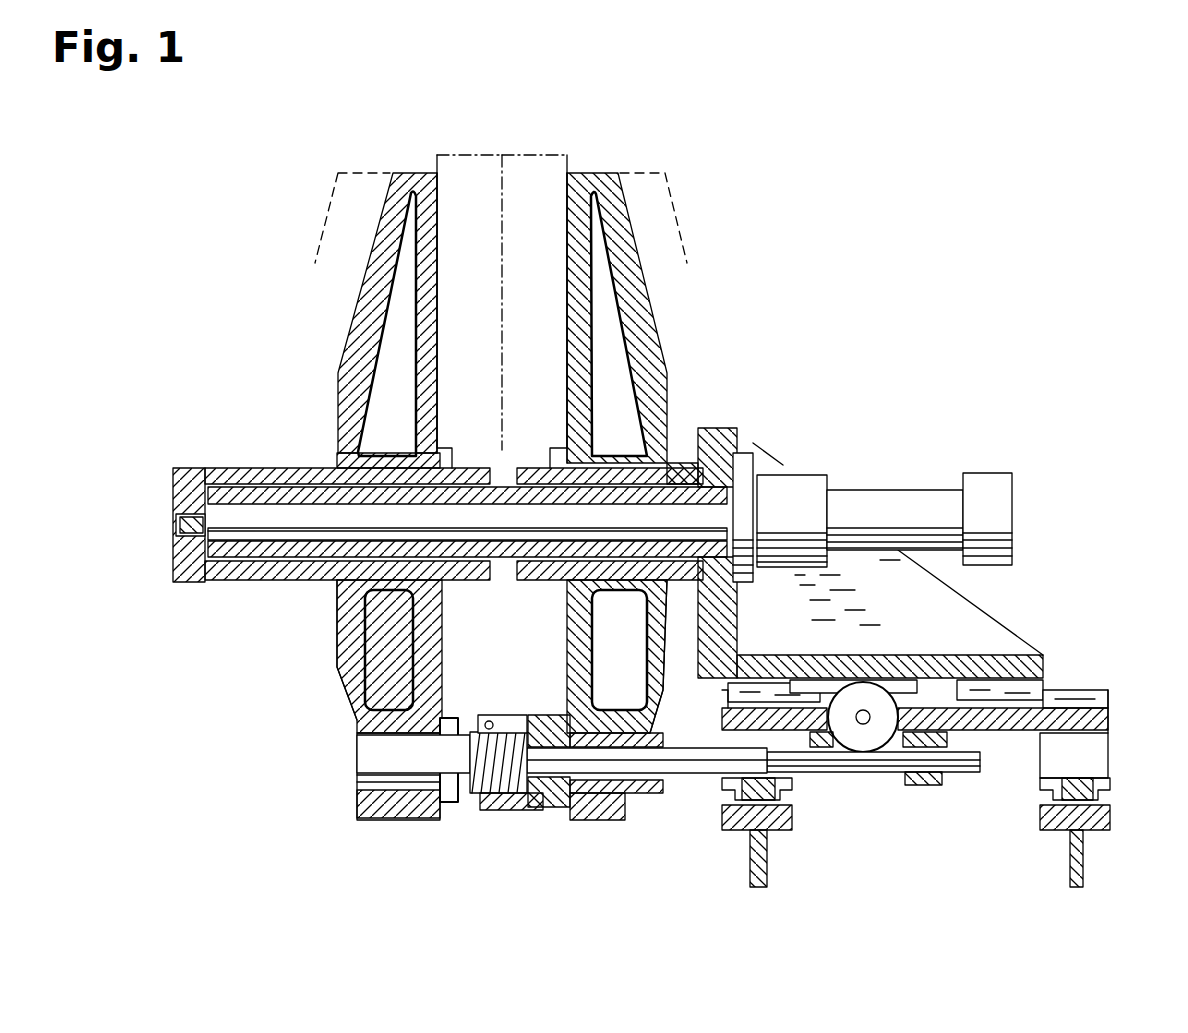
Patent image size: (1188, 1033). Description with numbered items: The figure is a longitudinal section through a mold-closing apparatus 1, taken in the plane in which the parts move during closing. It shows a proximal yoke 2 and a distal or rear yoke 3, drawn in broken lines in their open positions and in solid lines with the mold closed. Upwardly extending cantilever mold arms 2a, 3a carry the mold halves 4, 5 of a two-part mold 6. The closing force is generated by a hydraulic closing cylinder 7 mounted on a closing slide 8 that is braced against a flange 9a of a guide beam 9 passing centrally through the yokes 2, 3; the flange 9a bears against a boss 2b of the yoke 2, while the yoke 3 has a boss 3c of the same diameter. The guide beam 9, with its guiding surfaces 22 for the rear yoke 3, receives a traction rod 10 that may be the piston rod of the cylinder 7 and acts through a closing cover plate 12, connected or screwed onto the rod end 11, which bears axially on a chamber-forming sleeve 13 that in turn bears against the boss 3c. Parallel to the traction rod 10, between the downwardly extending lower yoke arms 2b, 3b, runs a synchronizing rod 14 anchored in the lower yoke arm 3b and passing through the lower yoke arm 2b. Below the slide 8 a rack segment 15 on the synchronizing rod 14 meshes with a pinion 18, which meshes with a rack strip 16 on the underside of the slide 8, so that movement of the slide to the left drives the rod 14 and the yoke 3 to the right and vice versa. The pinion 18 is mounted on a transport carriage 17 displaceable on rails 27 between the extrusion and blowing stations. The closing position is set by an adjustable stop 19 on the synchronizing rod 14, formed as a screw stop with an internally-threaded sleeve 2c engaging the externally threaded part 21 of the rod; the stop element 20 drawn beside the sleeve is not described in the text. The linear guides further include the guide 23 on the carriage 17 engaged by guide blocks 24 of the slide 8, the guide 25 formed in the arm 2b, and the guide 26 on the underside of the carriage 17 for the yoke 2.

The closing apparatus 1 is at (702, 98).
The proximal yoke 2 is at (678, 222).
The cantilever mold arm 2a is at (567, 247).
The lower yoke arm 2b is at (567, 645).
The internally-threaded sleeve 2c is at (660, 613).
The distal yoke 3 is at (327, 220).
The cantilever mold arm 3a is at (438, 347).
The lower yoke arm 3b is at (443, 643).
The boss 3c is at (332, 592).
The mold half 4 is at (545, 170).
The mold half 5 is at (466, 176).
The two-part mold 6 is at (510, 143).
The hydraulic closing cylinder 7 is at (880, 505).
The closing slide 8 is at (718, 428).
The guide beam 9 is at (289, 490).
The flange 9a is at (683, 463).
The traction rod 10 is at (313, 530).
The rod end 11 is at (175, 524).
The closing cover plate 12 is at (187, 493).
The chamber-forming sleeve 13 is at (229, 476).
The synchronizing rod 14 is at (463, 802).
The rack segment 15 is at (838, 773).
The rack strip 16 is at (862, 656).
The carriage 17 is at (1112, 720).
The pinion 18 is at (885, 744).
The adjustable stop 19 is at (500, 832).
The nut 20 is at (528, 810).
The externally threaded part 21 is at (497, 742).
The guiding surfaces 22 is at (440, 470).
The guide 23 is at (1075, 697).
The guide blocks 24 is at (728, 693).
The guide 25 is at (642, 805).
The guide 26 is at (928, 786).
The rails 27 is at (765, 832).